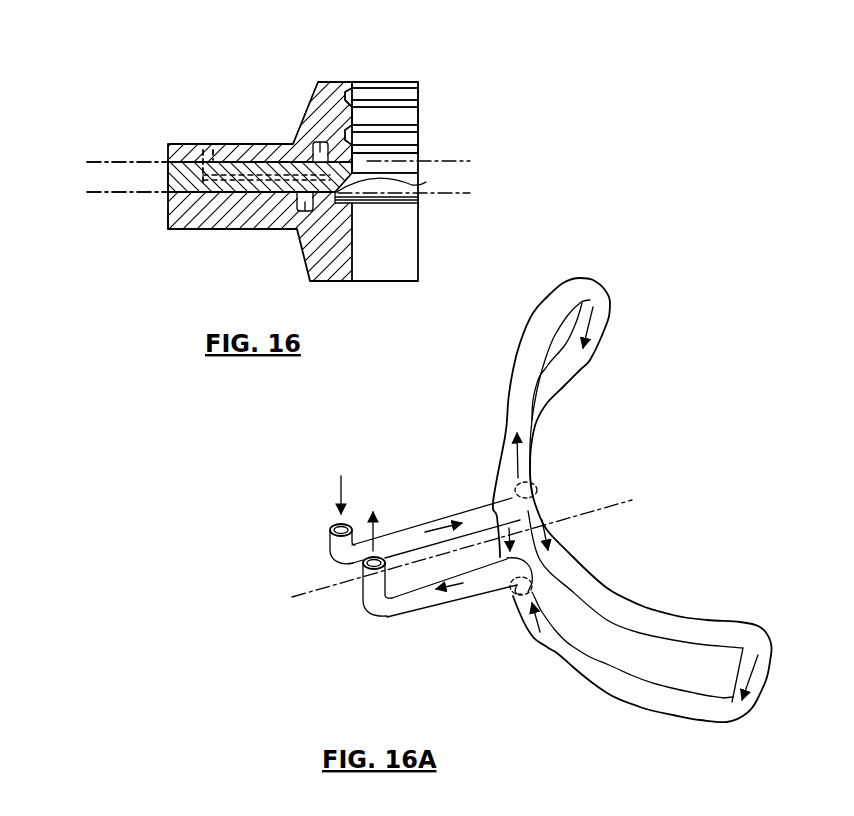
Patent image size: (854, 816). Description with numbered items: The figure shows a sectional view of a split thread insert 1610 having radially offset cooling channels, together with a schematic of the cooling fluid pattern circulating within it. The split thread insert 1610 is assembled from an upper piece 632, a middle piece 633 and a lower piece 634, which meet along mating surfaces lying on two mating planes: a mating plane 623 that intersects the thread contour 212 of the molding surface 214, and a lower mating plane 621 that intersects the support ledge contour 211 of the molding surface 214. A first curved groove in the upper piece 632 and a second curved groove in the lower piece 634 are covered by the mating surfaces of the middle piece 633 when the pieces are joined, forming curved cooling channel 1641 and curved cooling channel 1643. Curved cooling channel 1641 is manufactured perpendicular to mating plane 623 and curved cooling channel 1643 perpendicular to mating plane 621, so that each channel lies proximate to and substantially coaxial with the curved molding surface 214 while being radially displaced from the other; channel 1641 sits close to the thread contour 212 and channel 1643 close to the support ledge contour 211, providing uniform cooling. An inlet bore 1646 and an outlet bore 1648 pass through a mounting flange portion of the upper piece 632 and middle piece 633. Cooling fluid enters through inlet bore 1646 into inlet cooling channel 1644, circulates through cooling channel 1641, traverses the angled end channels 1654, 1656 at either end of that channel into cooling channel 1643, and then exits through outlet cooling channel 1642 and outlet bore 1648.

In FIG. 16, the split thread insert 1610 is at (160, 98).
In FIG. 16, the inlet bore 1646 is at (213, 152).
In FIG. 16A, the inlet bore 1646 is at (330, 522).
In FIG. 16, the outlet bore 1648 is at (213, 152).
In FIG. 16A, the outlet bore 1648 is at (362, 566).
In FIG. 16, the curved cooling channel 1641 is at (323, 145).
In FIG. 16A, the curved cooling channel 1641 is at (520, 400).
In FIG. 16, the upper piece 632 is at (170, 150).
In FIG. 16, the inlet cooling channel 1644 is at (268, 163).
In FIG. 16A, the inlet cooling channel 1644 is at (438, 523).
In FIG. 16, the mating plane 623 is at (122, 158).
In FIG. 16, the middle piece 633 is at (167, 172).
In FIG. 16, the mating plane 621 is at (92, 197).
In FIG. 16, the lower piece 634 is at (168, 225).
In FIG. 16, the outlet cooling channel 1642 is at (245, 188).
In FIG. 16A, the outlet cooling channel 1642 is at (452, 593).
In FIG. 16, the curved cooling channel 1643 is at (300, 212).
In FIG. 16A, the curved cooling channel 1643 is at (572, 663).
In FIG. 16, the thread contour 212 is at (428, 85).
In FIG. 16, the molding surface 214 is at (386, 166).
In FIG. 16, the support ledge contour 211 is at (338, 190).
In FIG. 16A, the angled end channel 1654 is at (596, 330).
In FIG. 16A, the angled end channel 1656 is at (744, 672).